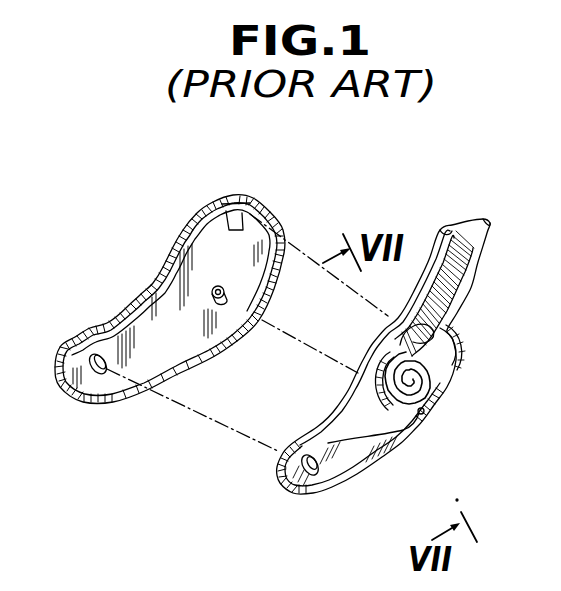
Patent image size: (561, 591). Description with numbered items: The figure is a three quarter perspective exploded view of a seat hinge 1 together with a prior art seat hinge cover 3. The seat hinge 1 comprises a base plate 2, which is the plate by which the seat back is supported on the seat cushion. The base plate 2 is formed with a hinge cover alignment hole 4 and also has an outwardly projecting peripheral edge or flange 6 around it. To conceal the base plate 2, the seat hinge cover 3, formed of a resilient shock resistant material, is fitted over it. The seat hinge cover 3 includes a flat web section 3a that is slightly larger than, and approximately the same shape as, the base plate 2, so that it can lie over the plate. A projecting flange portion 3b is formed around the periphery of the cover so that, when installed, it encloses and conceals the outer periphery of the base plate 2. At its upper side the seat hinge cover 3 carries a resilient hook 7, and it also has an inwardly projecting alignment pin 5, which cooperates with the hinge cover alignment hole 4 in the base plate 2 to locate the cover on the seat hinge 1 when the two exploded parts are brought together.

The seat hinge 1 is at (384, 366).
The base plate 2 is at (368, 463).
The seat hinge cover 3 is at (194, 325).
The flat web section 3a is at (148, 350).
The projecting flange portion 3b is at (112, 323).
The hinge cover alignment hole 4 is at (428, 414).
The alignment pin 5 is at (227, 308).
The peripheral edge or flange 6 is at (374, 337).
The resilient hook 7 is at (248, 210).